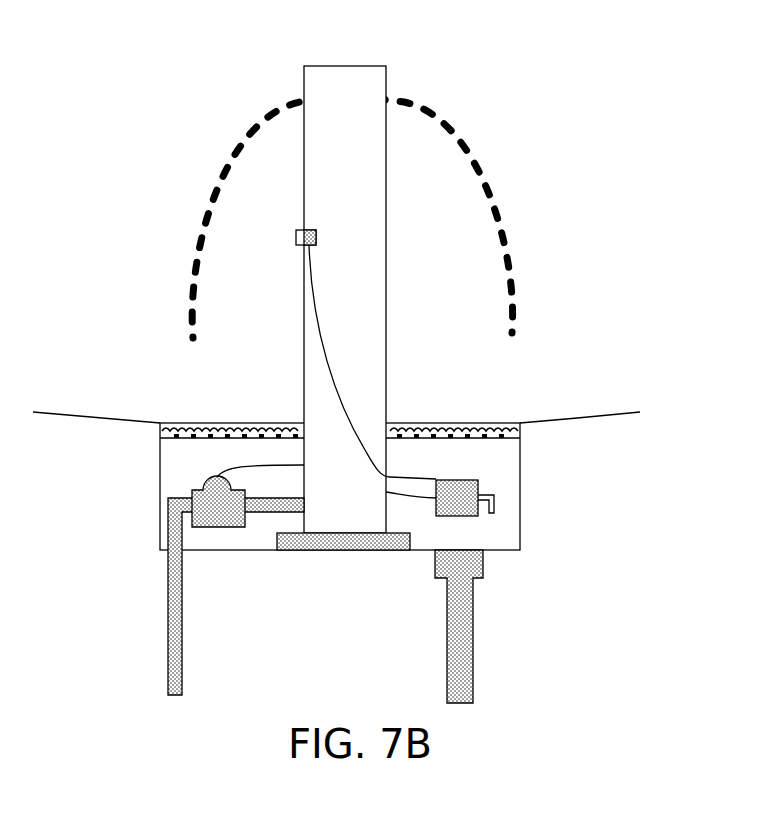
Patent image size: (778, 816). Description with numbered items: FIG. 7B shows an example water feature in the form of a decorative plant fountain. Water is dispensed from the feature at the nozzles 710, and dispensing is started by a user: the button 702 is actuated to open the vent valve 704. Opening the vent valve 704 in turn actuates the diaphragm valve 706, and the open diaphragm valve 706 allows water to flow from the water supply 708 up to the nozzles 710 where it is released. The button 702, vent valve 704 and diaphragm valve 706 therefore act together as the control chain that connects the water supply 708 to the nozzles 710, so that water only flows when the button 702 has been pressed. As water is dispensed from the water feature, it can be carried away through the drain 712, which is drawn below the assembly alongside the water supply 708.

The button 702 is at (297, 237).
The vent valve 704 is at (478, 487).
The diaphragm valve 706 is at (207, 487).
The water supply 708 is at (168, 612).
The nozzles 710 is at (417, 104).
The drain 712 is at (457, 640).